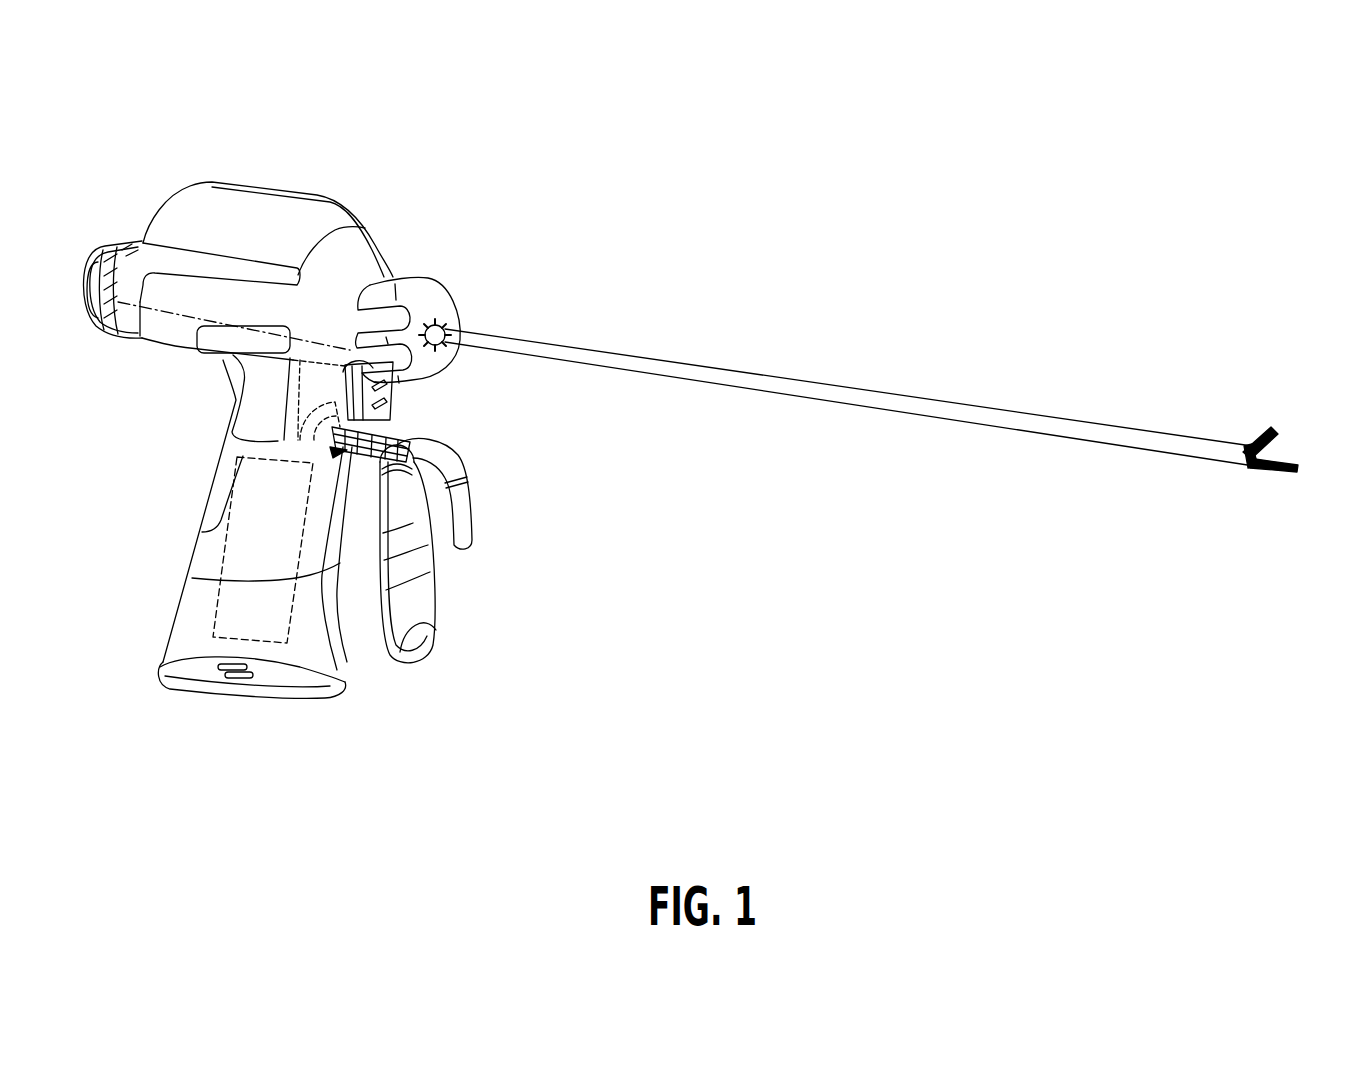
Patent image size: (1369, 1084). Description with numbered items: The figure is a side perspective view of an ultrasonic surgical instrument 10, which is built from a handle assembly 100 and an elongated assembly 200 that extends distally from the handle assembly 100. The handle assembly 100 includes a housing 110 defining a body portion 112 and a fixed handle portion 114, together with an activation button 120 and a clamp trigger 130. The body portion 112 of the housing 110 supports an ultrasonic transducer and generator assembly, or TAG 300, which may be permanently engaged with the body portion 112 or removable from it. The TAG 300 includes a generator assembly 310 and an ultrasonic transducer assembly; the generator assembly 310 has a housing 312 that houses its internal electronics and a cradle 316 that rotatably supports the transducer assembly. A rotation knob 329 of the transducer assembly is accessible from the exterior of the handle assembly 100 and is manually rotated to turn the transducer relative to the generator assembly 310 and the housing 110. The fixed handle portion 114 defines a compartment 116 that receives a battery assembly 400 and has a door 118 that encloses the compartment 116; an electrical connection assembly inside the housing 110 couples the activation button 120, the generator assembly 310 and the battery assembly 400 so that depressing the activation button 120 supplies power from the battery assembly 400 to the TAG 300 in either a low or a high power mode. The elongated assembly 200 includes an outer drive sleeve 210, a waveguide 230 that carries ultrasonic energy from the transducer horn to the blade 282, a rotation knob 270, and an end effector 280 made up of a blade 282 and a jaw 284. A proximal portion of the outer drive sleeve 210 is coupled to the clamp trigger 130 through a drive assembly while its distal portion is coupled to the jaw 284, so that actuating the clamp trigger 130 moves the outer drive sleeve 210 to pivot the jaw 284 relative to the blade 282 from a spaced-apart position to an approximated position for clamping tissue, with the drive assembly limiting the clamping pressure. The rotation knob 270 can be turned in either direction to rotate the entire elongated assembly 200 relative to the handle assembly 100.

The ultrasonic surgical instrument 10 is at (840, 210).
The handle assembly 100 is at (259, 158).
The housing 110 is at (233, 354).
The body portion 112 is at (163, 300).
The fixed handle portion 114 is at (205, 538).
The compartment 116 is at (195, 618).
The door 118 is at (277, 690).
The activation button 120 is at (390, 395).
The clamp trigger 130 is at (425, 628).
The elongated assembly 200 is at (735, 326).
The outer drive sleeve 210 is at (1045, 416).
The waveguide 230 is at (1311, 472).
The rotation knob 270 is at (432, 303).
The end effector 280 is at (1332, 407).
The blade 282 is at (1275, 468).
The jaw 284 is at (1277, 432).
The ultrasonic transducer and generator assembly (TAG) 300 is at (326, 208).
The generator assembly 310 is at (291, 208).
The housing 312 is at (224, 204).
The cradle 316 is at (133, 280).
The rotation knob 329 is at (83, 280).
The battery assembly 400 is at (247, 571).